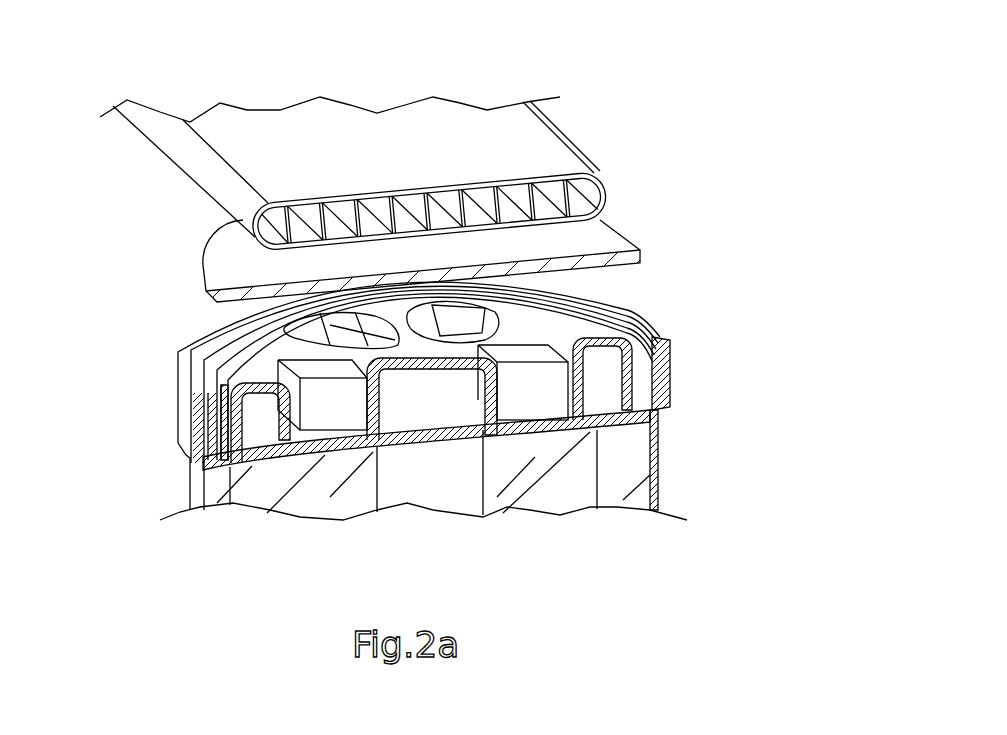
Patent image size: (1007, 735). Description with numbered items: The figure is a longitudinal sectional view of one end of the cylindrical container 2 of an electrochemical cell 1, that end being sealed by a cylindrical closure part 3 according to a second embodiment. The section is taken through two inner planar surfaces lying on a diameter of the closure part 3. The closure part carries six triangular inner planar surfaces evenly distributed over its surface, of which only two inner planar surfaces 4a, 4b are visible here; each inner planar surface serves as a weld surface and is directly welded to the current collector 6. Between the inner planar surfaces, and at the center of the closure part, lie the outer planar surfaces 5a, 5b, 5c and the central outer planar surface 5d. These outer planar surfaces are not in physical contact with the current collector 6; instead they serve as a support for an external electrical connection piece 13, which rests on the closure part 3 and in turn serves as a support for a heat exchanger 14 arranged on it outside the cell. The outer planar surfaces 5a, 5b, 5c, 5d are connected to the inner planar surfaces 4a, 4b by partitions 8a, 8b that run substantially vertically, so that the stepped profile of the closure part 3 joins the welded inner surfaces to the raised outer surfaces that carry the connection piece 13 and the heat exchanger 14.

The electrochemical cell 1 is at (690, 113).
The cylindrical container 2 is at (660, 463).
The cylindrical closure part 3 is at (664, 340).
The inner planar surface 4a is at (340, 430).
The inner planar surface 4b is at (552, 420).
The outer planar surface 5a is at (340, 306).
The outer planar surface 5b is at (480, 296).
The outer planar surface 5c is at (405, 300).
The outer planar surface at the center of the closure part 5d is at (425, 347).
The current collector 6 is at (248, 438).
The partition 8a is at (295, 420).
The partition 8b is at (590, 420).
The external electrical connection piece 13 is at (628, 230).
The heat exchanger 14 is at (573, 147).